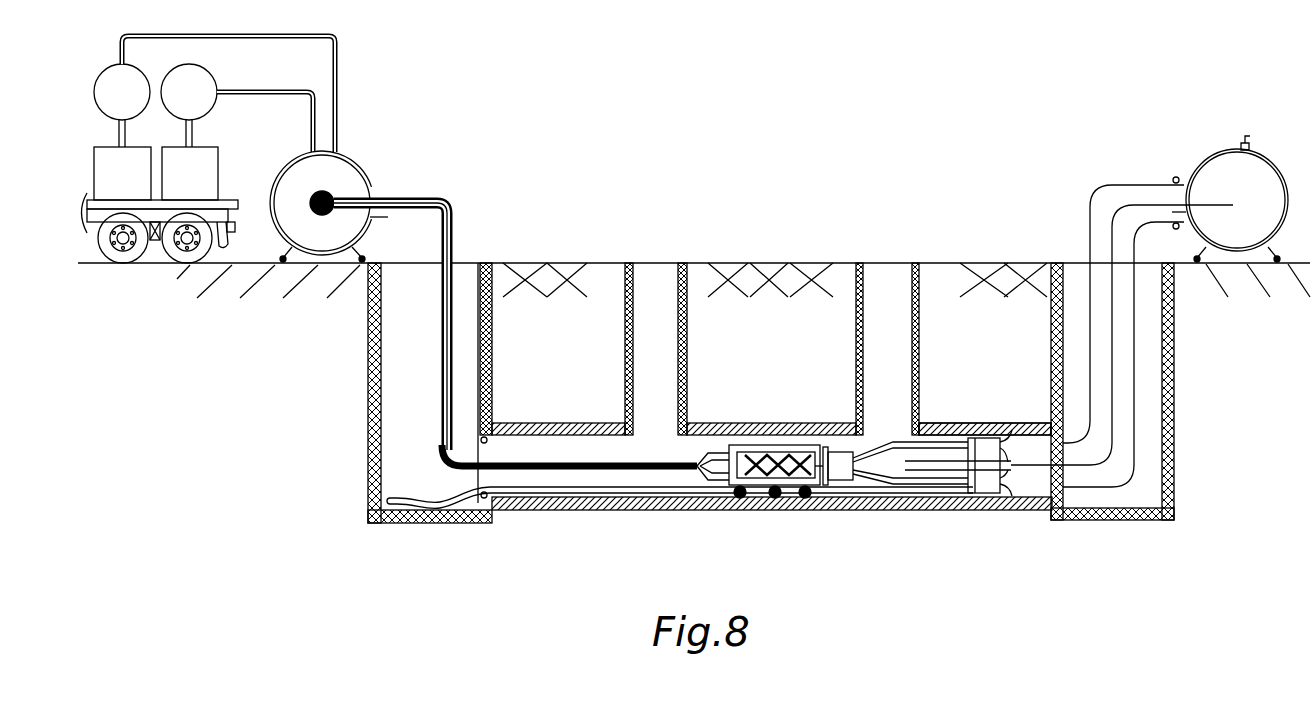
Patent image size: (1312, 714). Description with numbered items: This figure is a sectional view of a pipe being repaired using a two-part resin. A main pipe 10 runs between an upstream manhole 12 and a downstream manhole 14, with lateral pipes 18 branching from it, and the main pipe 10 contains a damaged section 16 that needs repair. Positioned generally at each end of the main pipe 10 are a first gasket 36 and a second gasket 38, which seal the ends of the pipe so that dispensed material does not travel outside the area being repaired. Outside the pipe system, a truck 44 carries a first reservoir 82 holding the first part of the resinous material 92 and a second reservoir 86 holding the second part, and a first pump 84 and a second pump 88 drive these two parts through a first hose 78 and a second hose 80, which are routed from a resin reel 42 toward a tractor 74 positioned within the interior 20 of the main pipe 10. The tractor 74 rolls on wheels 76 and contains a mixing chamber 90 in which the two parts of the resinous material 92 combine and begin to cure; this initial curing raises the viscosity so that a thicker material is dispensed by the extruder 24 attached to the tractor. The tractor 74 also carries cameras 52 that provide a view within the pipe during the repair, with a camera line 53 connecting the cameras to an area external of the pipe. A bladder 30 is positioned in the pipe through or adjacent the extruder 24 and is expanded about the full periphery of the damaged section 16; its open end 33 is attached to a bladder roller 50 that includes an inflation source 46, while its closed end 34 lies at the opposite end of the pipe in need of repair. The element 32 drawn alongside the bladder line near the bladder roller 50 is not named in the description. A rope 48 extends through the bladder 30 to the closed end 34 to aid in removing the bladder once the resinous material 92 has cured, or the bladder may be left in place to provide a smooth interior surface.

The main pipe 10 is at (1044, 422).
The upstream manhole 12 is at (1050, 350).
The downstream manhole 14 is at (493, 338).
The damaged section 16 is at (982, 423).
The lateral pipes 18 is at (626, 351).
The interior 20 is at (574, 437).
The extruder 24 is at (876, 440).
The bladder 30 is at (1080, 220).
The outer hose 32 is at (1103, 492).
The open end 33 is at (1185, 182).
The closed end 34 is at (368, 500).
The first gasket 36 is at (1062, 500).
The second gasket 38 is at (498, 503).
The resin reel 42 is at (352, 158).
The truck 44 is at (227, 202).
The inflation source 46 is at (1250, 139).
The rope 48 is at (1114, 346).
The bladder roller 50 is at (1220, 154).
The cameras 52 is at (826, 447).
The camera line 53 is at (697, 458).
The tractor 74 is at (770, 445).
The wheels 76 is at (736, 500).
The first hose 78 is at (338, 54).
The second hose 80 is at (296, 96).
The first reservoir 82 is at (132, 63).
The first pump 84 is at (131, 147).
The second reservoir 86 is at (214, 75).
The second pump 88 is at (196, 147).
The mixing chamber 90 is at (790, 476).
The resinous material 92 is at (1008, 496).